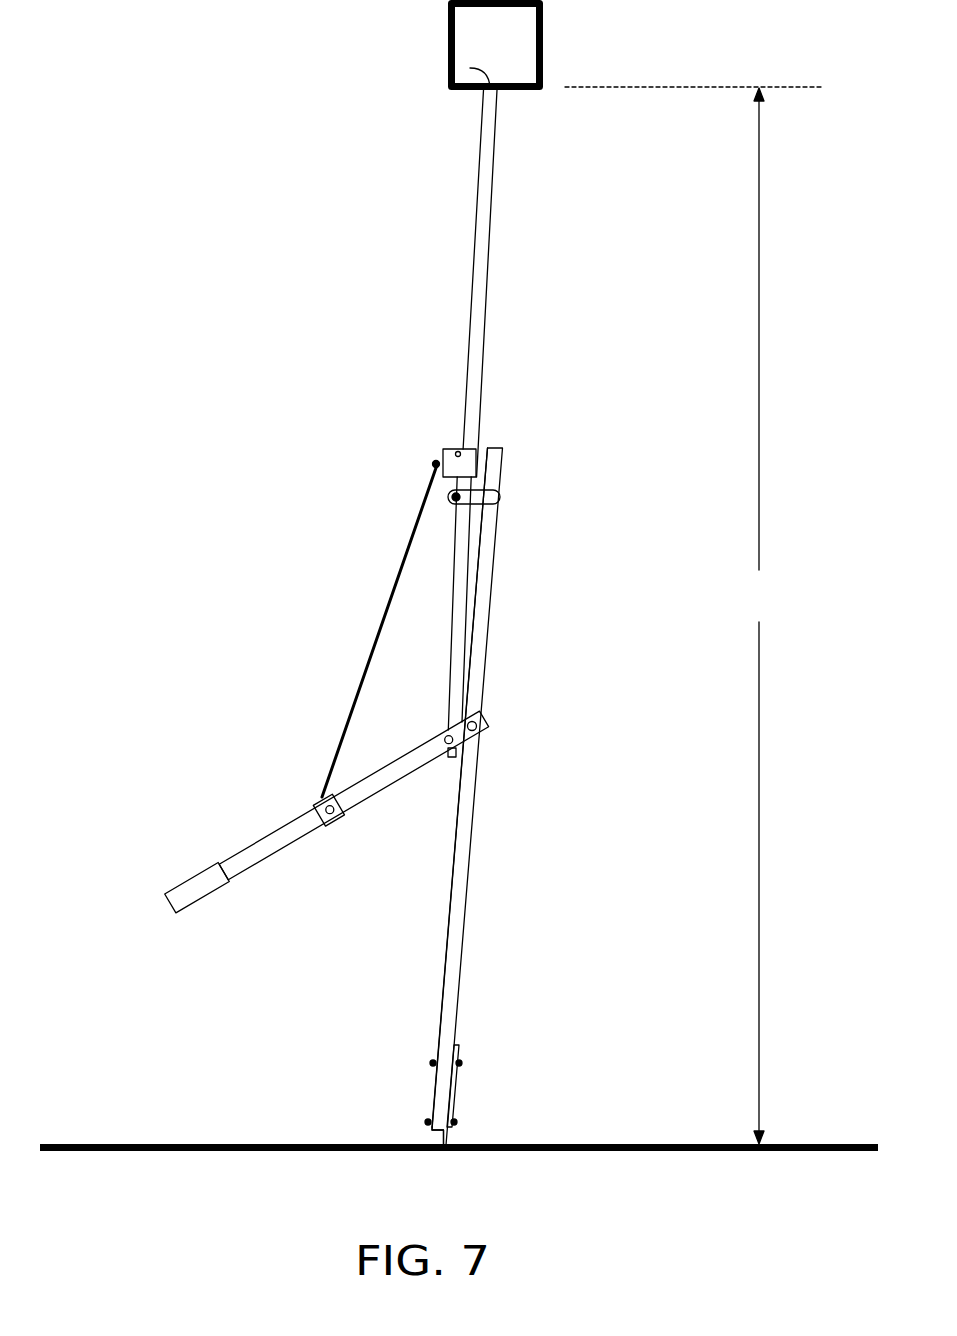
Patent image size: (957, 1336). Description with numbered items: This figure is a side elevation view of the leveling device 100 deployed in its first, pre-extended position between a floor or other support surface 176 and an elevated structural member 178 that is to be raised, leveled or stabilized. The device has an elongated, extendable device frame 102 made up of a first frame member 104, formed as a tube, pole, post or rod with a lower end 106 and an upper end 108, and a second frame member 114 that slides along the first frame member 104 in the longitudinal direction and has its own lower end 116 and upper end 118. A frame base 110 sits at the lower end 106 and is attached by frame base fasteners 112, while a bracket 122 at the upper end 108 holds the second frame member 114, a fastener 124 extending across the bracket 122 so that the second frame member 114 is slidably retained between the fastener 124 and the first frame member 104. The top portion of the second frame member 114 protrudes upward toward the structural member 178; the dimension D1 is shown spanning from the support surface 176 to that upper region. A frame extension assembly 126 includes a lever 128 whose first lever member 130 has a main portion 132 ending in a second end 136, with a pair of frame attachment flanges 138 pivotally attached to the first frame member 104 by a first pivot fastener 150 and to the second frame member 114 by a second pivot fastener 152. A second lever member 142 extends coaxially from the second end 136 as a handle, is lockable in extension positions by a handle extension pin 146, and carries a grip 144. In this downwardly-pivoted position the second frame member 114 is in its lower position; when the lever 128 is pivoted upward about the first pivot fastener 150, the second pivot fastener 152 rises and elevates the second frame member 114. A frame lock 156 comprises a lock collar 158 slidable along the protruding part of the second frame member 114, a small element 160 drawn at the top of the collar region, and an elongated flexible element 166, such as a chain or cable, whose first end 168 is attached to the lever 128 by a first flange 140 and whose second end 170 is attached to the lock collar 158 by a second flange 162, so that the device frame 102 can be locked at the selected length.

The leveling device 100 is at (357, 196).
The device frame 102 is at (508, 600).
The first frame member 104 is at (466, 945).
The lower end 106 is at (440, 1135).
The upper end 108 is at (501, 450).
The frame base 110 is at (457, 1098).
The frame base fastener 112 is at (430, 1062).
The second frame member 114 is at (471, 285).
The lower end 116 is at (448, 758).
The upper end 118 is at (470, 68).
The bracket 122 is at (487, 518).
The fastener 124 is at (455, 501).
The frame extension assembly 126 is at (140, 820).
The lever 128 is at (218, 856).
The first lever member 130 is at (372, 800).
The main portion 132 is at (363, 782).
The second end 136 is at (321, 830).
The frame attachment flanges 138 is at (479, 742).
The first flange 140 is at (318, 804).
The second lever member 142 is at (235, 882).
The grip 144 is at (185, 885).
The handle extension pin 146 is at (335, 823).
The first pivot fastener 150 is at (480, 720).
The second pivot fastener 152 is at (447, 734).
The frame lock 156 is at (356, 669).
The lock collar 158 is at (477, 448).
The pin 160 is at (456, 449).
The second flange 162 is at (443, 458).
The elongated flexible element 166 is at (385, 613).
The first end 168 is at (319, 794).
The second end 170 is at (432, 465).
The support surface 176 is at (200, 1144).
The structural member 178 is at (448, 30).
The height dimension D1 is at (693, 615).